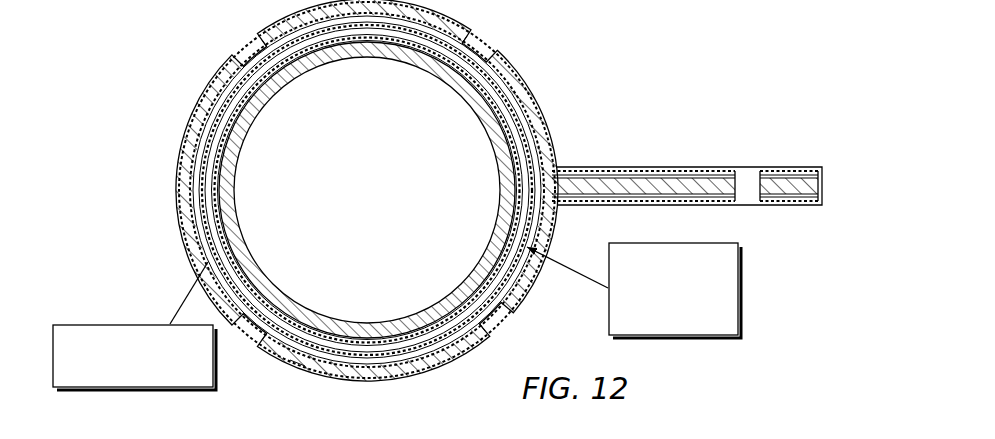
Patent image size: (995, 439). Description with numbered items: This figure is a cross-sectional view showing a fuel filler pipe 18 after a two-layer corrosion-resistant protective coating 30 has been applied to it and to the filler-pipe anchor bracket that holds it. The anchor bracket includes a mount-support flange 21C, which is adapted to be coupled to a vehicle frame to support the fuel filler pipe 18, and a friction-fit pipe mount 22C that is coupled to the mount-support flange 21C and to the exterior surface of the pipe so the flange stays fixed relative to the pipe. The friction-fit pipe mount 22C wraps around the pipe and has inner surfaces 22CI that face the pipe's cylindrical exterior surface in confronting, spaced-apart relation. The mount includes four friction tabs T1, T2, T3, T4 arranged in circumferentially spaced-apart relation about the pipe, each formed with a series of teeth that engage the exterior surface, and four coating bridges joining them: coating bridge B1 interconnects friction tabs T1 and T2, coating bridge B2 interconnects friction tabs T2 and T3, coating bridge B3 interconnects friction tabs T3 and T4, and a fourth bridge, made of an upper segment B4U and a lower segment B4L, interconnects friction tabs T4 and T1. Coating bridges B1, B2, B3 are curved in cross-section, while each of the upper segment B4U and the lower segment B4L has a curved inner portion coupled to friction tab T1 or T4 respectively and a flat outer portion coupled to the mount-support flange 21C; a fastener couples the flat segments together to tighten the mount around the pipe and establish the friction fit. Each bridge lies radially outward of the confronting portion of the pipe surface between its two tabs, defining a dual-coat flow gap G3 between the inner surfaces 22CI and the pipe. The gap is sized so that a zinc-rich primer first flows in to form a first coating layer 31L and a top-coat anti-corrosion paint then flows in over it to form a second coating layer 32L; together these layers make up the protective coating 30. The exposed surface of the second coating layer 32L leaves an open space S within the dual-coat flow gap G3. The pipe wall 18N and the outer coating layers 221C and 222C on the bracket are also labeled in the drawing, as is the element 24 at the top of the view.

The fuel filler pipe 18 is at (740, 290).
The fuel filler pipe neck wall 18N is at (330, 323).
The mount-support flange 21C is at (797, 203).
The friction-fit pipe mount 22C is at (548, 100).
The inner surfaces 22CI is at (213, 150).
The cap 24 is at (706, 183).
The multi-layer corrosion-resistant protective coating 30 is at (660, 118).
The first coating layer 31L is at (628, 168).
The second coating layer 32L is at (590, 167).
The outer coat of band 221C is at (196, 108).
The coat of cap 222C is at (705, 182).
The coating bridge B1 is at (452, 14).
The coating bridge B2 is at (185, 172).
The coating bridge B3 is at (425, 364).
The upper segment B4U is at (551, 120).
The lower segment B4L is at (672, 204).
The friction tab T1 is at (465, 75).
The friction tab T2 is at (262, 77).
The friction tab T3 is at (286, 292).
The friction tab T4 is at (466, 289).
The open space S is at (298, 357).
The dual-coat flow gap G3 is at (98, 324).